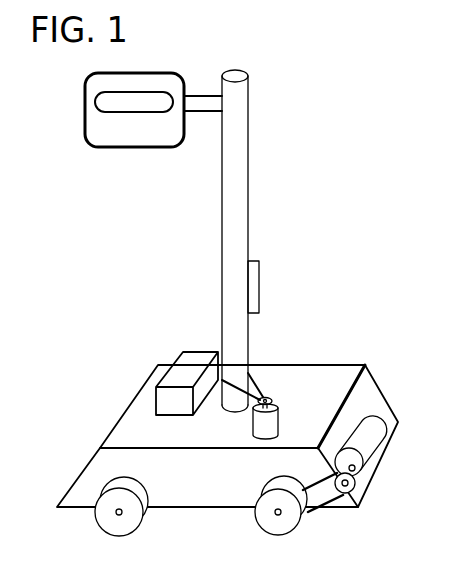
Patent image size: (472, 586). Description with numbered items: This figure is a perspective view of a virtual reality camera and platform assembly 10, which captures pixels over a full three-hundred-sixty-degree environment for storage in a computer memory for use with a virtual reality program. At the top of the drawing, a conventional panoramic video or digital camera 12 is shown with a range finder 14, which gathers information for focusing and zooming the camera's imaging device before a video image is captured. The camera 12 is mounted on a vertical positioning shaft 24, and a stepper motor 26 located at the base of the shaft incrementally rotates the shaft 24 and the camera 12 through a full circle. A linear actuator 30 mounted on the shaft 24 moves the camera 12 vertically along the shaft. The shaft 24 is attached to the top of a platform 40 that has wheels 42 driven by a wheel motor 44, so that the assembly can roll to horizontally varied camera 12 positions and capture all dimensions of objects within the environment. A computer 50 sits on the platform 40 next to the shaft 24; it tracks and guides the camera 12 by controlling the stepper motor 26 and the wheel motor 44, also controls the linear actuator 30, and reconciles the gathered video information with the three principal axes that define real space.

The virtual reality camera and platform assembly 10 is at (302, 167).
The panoramic video or digital camera 12 is at (139, 147).
The range finder 14 is at (152, 106).
The vertical positioning shaft 24 is at (248, 336).
The stepper motor 26 is at (278, 425).
The linear actuator 30 is at (261, 290).
The platform 40 is at (214, 488).
The wheels 42 is at (267, 523).
The wheel motor 44 is at (367, 422).
The computer 50 is at (198, 357).